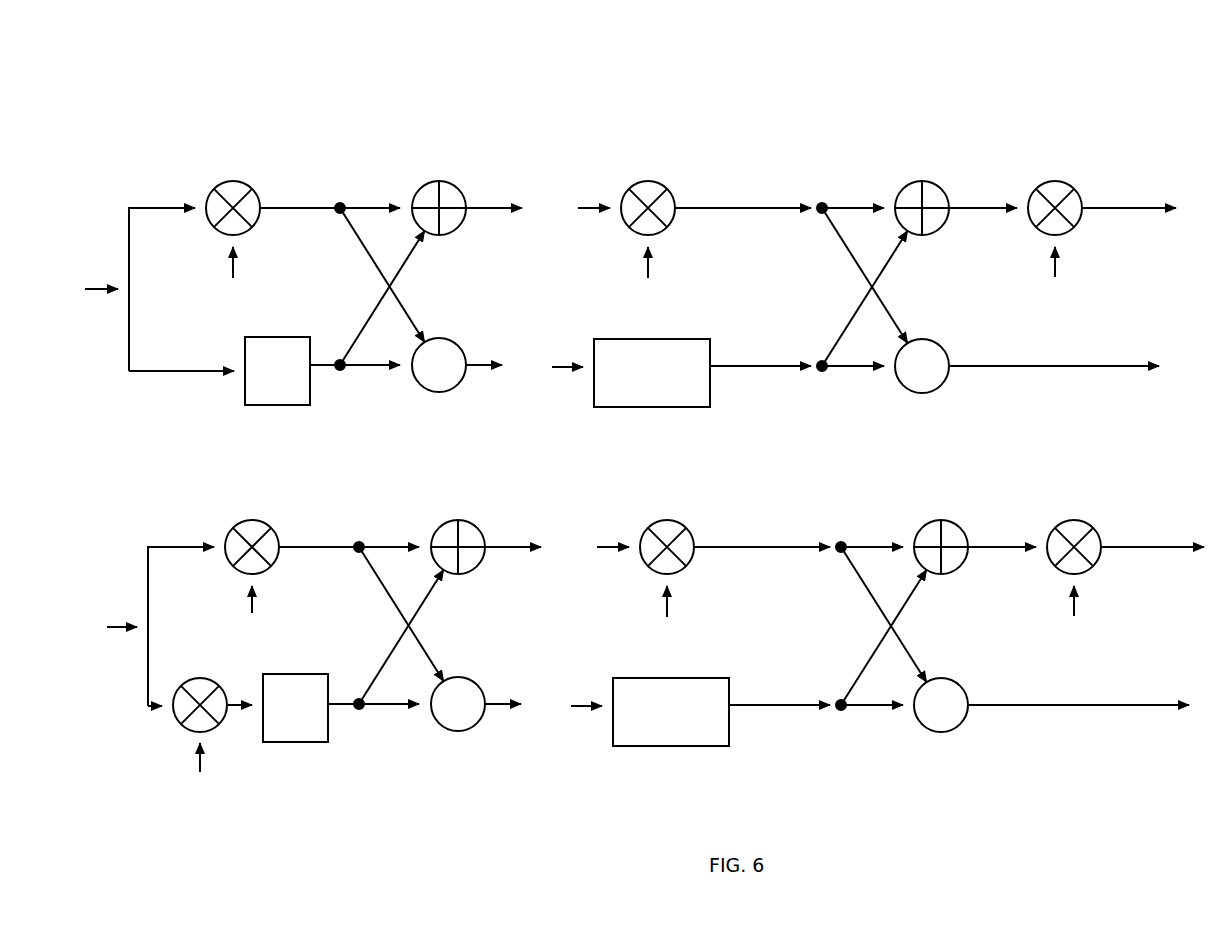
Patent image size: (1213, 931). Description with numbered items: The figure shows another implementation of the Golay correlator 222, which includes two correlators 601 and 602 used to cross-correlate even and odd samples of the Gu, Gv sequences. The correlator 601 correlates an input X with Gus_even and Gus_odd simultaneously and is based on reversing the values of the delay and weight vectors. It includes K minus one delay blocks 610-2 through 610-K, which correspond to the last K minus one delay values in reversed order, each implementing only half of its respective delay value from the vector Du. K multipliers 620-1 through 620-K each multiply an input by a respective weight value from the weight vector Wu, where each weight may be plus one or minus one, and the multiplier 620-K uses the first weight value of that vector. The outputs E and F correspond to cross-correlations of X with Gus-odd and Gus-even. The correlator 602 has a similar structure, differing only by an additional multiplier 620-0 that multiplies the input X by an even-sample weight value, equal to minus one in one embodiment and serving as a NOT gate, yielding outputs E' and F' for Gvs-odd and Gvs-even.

The Golay correlator 222 is at (635, 415).
The correlator 601 is at (125, 325).
The correlator 602 is at (145, 663).
The multiplier 620-1 is at (223, 182).
The additional multiplier 620-0 is at (200, 678).
The multiplier 620-K is at (1055, 182).
The delay block 610-2 is at (289, 337).
The delay block 610-K is at (688, 339).